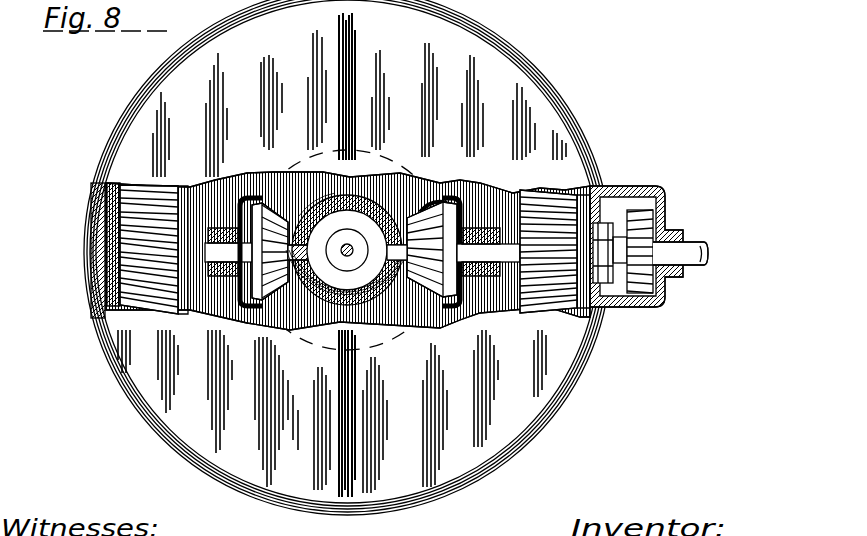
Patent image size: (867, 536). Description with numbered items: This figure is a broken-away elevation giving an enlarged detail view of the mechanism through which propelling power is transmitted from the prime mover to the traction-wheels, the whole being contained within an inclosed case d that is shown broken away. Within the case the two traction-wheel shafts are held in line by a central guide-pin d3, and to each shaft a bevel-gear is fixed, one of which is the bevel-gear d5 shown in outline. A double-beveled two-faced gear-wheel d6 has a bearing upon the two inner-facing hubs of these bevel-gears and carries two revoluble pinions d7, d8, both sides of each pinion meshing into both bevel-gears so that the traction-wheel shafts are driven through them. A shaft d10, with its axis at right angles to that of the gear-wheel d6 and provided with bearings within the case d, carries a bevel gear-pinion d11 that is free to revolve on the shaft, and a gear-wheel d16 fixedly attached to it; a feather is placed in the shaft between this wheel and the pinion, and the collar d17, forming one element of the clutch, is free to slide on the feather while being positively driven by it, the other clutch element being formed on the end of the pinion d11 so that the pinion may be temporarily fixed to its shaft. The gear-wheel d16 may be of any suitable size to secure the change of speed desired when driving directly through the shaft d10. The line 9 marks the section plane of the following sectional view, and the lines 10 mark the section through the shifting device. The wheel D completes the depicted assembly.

The wheel D is at (245, 405).
The inclosed case d is at (563, 365).
The central guide-pin d3 is at (347, 250).
The bevel-gear d5 is at (180, 248).
The double-beveled two-faced gear-wheel d6 is at (523, 251).
The revoluble pinion d7 is at (245, 230).
The revoluble pinion d8 is at (421, 227).
The shaft d10 is at (700, 262).
The bevel gear-pinion d11 is at (322, 165).
The gear-wheel d16 is at (647, 290).
The collar d17 is at (623, 226).
The section line 9 is at (103, 253).
The section line 10 is at (407, 27).